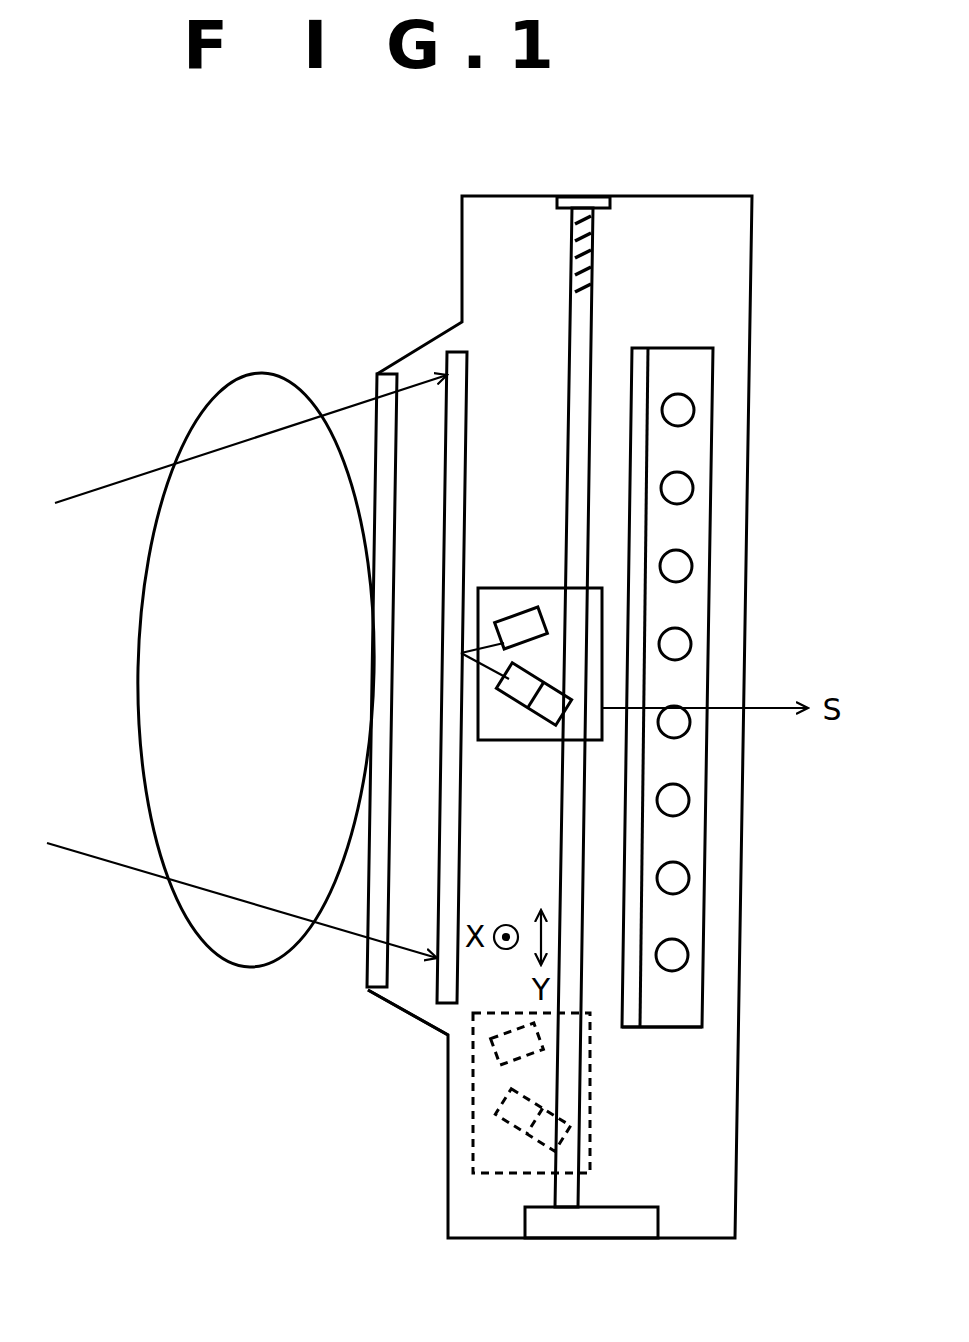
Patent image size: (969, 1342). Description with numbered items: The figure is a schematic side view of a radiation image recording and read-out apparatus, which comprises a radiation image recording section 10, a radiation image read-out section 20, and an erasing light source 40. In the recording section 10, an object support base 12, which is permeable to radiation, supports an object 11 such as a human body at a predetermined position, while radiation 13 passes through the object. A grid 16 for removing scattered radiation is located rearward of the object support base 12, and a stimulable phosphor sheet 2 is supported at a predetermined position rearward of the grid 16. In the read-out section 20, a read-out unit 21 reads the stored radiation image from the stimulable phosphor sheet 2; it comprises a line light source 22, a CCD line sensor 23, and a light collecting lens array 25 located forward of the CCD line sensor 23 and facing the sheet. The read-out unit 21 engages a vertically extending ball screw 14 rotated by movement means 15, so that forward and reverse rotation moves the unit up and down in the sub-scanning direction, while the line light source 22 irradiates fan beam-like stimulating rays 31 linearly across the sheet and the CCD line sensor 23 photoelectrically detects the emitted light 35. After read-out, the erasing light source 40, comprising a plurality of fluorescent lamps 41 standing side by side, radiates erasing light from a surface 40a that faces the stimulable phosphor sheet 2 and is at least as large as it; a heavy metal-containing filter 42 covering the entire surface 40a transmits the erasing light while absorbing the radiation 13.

The radiation image recording section 10 is at (348, 331).
The stimulable phosphor sheet 2 is at (460, 350).
The object 11 is at (242, 955).
The object support base 12 is at (367, 975).
The radiation 13 is at (88, 860).
The ball screw 14 is at (593, 308).
The movement means 15 is at (644, 1208).
The grid 16 is at (378, 992).
The radiation image read-out section 20 is at (528, 468).
The read-out unit 21 is at (588, 737).
The line light source 22 is at (536, 608).
The CCD line sensor 23 is at (552, 722).
The light collecting lens array 25 is at (513, 706).
The stimulating rays 31 is at (496, 637).
The emitted light 35 is at (486, 685).
The erasing light source 40 is at (697, 347).
The surface 40a is at (640, 968).
The fluorescent lamps 41 is at (694, 410).
The heavy metal-containing filter 42 is at (645, 346).